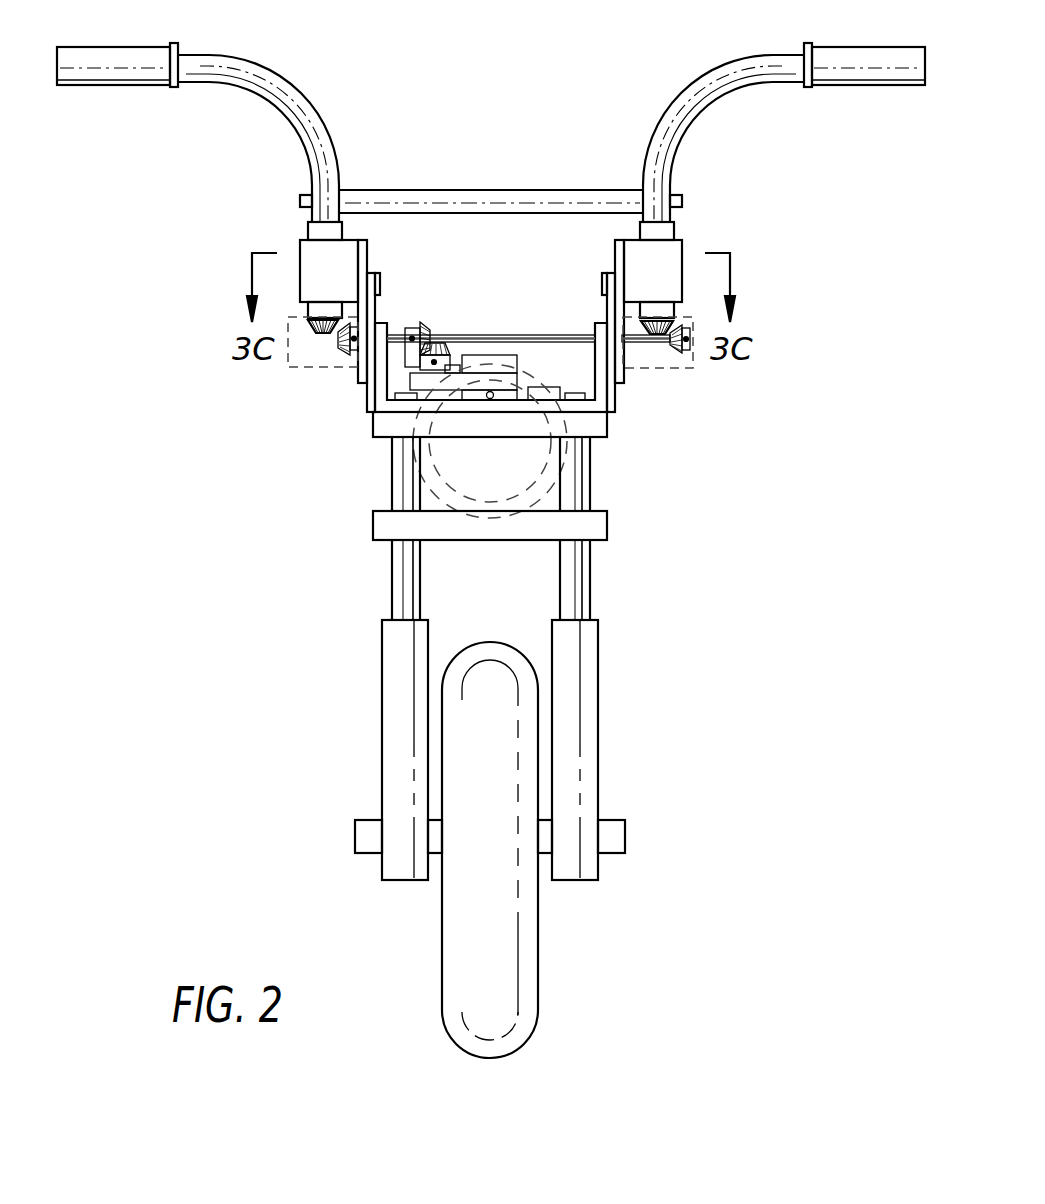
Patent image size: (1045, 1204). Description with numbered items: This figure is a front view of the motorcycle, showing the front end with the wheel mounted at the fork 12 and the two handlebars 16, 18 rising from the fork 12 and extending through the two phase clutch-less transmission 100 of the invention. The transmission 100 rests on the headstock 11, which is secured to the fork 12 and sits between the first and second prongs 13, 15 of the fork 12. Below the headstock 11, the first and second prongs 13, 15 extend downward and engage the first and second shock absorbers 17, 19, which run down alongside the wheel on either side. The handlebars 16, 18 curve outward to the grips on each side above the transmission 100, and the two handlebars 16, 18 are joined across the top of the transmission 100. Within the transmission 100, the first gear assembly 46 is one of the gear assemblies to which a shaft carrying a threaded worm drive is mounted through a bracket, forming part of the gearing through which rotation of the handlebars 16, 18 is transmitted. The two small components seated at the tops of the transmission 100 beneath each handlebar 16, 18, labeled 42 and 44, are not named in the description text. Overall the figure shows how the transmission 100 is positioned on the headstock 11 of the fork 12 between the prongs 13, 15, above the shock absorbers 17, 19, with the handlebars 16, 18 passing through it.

The two phase clutch-less transmission 100 is at (675, 407).
The headstock 11 is at (594, 428).
The fork 12 is at (338, 779).
The first prong 13 is at (396, 470).
The second prong 15 is at (582, 470).
The handlebar 16 is at (322, 120).
The first shock absorber 17 is at (388, 735).
The handlebar 18 is at (672, 102).
The second shock absorber 19 is at (586, 733).
The left actuator 42 is at (306, 230).
The right actuator 44 is at (676, 230).
The first gear assembly 46 is at (478, 188).